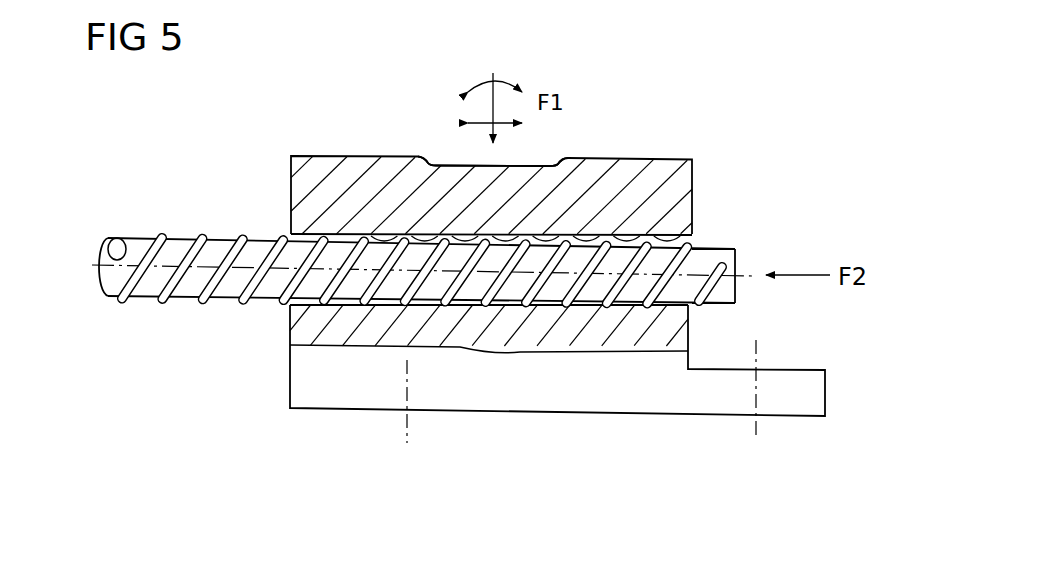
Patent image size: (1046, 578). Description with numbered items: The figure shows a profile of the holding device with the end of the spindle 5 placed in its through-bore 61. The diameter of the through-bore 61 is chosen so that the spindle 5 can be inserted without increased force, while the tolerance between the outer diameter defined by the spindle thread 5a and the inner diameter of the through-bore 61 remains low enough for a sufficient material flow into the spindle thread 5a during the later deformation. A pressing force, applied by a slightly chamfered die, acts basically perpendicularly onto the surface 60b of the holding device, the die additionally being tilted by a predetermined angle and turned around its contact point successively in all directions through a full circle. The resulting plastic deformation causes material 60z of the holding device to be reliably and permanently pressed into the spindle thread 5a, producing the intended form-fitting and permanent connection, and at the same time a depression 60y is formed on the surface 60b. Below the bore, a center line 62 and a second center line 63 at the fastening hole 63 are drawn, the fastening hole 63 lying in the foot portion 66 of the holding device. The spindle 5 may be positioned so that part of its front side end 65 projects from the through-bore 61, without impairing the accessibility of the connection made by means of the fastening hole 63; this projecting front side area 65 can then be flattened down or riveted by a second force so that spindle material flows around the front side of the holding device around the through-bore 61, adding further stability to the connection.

The spindle 5 is at (153, 278).
The spindle thread 5a is at (157, 238).
The surface 60b is at (650, 158).
The depression 60y is at (556, 162).
The material 60z is at (383, 240).
The through-bore 61 is at (296, 303).
The center line of the lower block 62 is at (408, 430).
The fastening hole 63 is at (755, 424).
The front side end 65 is at (742, 249).
The foot / base portion 66 is at (817, 369).